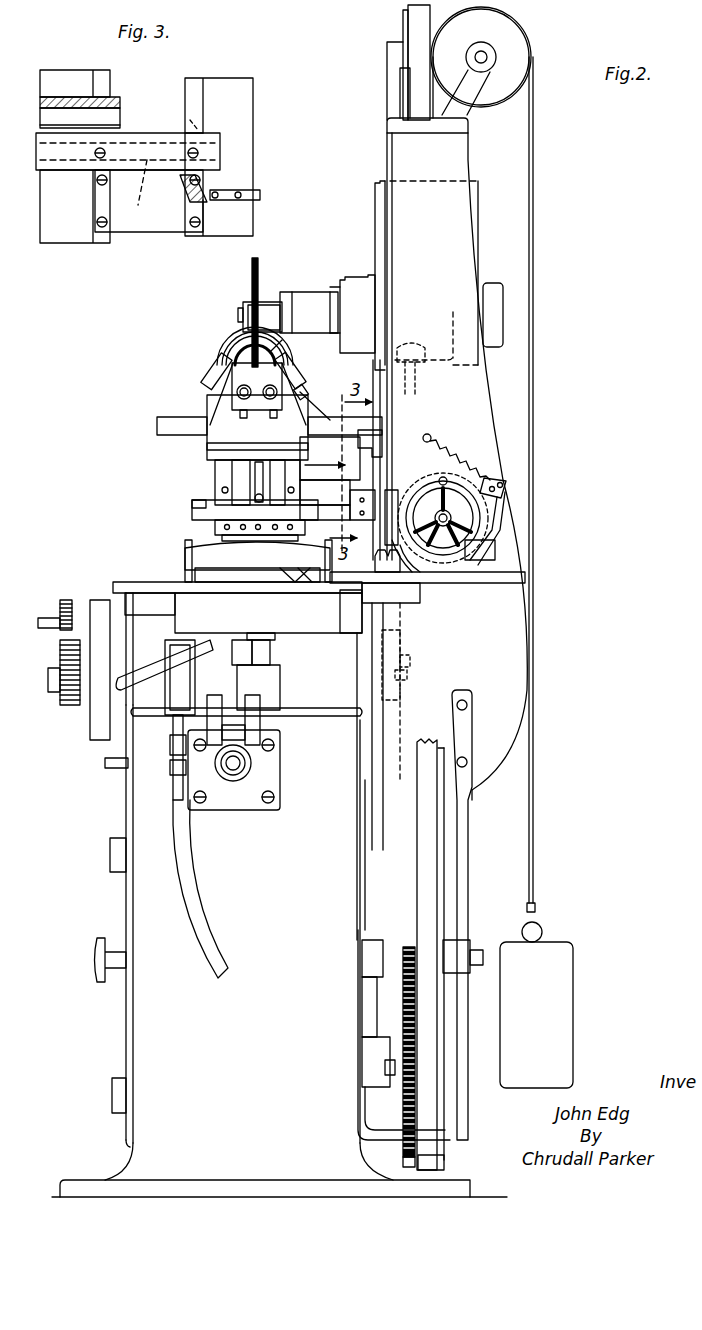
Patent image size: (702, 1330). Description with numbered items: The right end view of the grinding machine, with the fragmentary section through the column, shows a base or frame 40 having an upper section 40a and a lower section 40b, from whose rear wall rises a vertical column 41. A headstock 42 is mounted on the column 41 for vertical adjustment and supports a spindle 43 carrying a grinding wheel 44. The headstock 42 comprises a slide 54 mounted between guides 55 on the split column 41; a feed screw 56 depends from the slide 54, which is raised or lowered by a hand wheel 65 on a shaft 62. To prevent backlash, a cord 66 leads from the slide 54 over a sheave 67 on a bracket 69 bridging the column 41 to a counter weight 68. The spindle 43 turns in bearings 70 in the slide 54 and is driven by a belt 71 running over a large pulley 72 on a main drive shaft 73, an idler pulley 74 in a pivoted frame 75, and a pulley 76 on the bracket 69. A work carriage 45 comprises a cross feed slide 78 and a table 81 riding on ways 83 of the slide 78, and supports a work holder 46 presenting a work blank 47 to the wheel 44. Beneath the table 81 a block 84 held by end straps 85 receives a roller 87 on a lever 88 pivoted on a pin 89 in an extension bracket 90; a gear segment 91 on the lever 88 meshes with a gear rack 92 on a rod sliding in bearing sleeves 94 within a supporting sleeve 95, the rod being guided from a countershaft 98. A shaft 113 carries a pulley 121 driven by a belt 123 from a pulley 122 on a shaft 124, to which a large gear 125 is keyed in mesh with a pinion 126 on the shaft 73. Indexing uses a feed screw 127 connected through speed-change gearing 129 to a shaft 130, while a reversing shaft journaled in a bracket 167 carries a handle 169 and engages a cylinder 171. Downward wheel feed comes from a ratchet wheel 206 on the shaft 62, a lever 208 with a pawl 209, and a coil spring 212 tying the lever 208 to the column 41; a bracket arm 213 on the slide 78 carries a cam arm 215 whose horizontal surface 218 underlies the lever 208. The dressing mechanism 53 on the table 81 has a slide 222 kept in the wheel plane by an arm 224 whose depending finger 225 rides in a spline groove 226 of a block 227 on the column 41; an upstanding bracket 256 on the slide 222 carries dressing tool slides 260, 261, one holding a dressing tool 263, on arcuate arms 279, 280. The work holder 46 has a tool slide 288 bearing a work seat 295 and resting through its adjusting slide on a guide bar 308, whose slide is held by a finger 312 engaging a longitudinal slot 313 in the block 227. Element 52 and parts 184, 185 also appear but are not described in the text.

In FIG. 2, the base 40 is at (279, 951).
In FIG. 2, the upper section of the base 40a is at (360, 640).
In FIG. 2, the lower section of the base 40b is at (340, 855).
In FIG. 3, the vertical column 41 is at (245, 85).
In FIG. 2, the vertical column 41 is at (445, 275).
In FIG. 2, the headstock 42 is at (482, 225).
In FIG. 2, the spindle 43 is at (240, 312).
In FIG. 2, the grinding wheel 44 is at (258, 258).
In FIG. 2, the work carriage 45 is at (183, 580).
In FIG. 2, the work holder 46 is at (212, 470).
In FIG. 2, the work blank 47 is at (245, 375).
In FIG. 2, the ratchet wheel 52 is at (470, 470).
In FIG. 2, the dressing mechanism 53 is at (222, 345).
In FIG. 2, the slide 54 is at (374, 190).
In FIG. 3, the vertical guides 55 is at (190, 80).
In FIG. 2, the feed screw 56 is at (434, 372).
In FIG. 2, the shaft 62 is at (467, 560).
In FIG. 2, the hand wheel 65 is at (478, 524).
In FIG. 2, the cord 66 is at (535, 118).
In FIG. 2, the sheave 67 is at (523, 50).
In FIG. 2, the counter weight 68 is at (560, 1020).
In FIG. 2, the bracket 69 is at (462, 128).
In FIG. 2, the bearings 70 is at (360, 280).
In FIG. 2, the belt 71 is at (412, 14).
In FIG. 2, the large pulley 72 is at (470, 850).
In FIG. 2, the main drive shaft 73 is at (477, 948).
In FIG. 2, the idler pulley 74 is at (440, 1158).
In FIG. 2, the frame 75 is at (365, 1110).
In FIG. 2, the pulley 76 is at (403, 33).
In FIG. 2, the cross feed slide 78 is at (125, 584).
In FIG. 2, the table 81 is at (208, 553).
In FIG. 2, the ways 83 is at (292, 582).
In FIG. 2, the block 84 is at (183, 600).
In FIG. 2, the retaining end straps 85 is at (185, 566).
In FIG. 2, the roller 87 is at (228, 636).
In FIG. 2, the lever 88 is at (272, 652).
In FIG. 2, the pin 89 is at (282, 712).
In FIG. 2, the extension bracket 90 is at (280, 758).
In FIG. 2, the gear segment 91 is at (232, 732).
In FIG. 2, the gear rack 92 is at (235, 770).
In FIG. 2, the bearing sleeves 94 is at (252, 765).
In FIG. 2, the supporting sleeve 95 is at (225, 780).
In FIG. 2, the countershaft 98 is at (125, 770).
In FIG. 2, the shaft 113 is at (412, 660).
In FIG. 2, the pulley 121 is at (410, 682).
In FIG. 2, the pulley 122 is at (385, 1066).
In FIG. 2, the belt 123 is at (400, 886).
In FIG. 2, the shaft 124 is at (372, 1048).
In FIG. 2, the large gear 125 is at (405, 1160).
In FIG. 2, the pinion 126 is at (408, 945).
In FIG. 2, the feed screw 127 is at (52, 618).
In FIG. 2, the speed-change gearing 129 is at (56, 684).
In FIG. 2, the shaft 130 is at (68, 660).
In FIG. 2, the bracket 167 is at (300, 650).
In FIG. 2, the handle 169 is at (125, 680).
In FIG. 2, the cylinder 171 is at (281, 680).
In FIG. 2, the rod 184 is at (175, 712).
In FIG. 2, the tube 185 is at (205, 945).
In FIG. 2, the ratchet wheel 206 is at (503, 503).
In FIG. 2, the lever 208 is at (507, 487).
In FIG. 2, the pawl 209 is at (496, 500).
In FIG. 2, the coil spring 212 is at (450, 455).
In FIG. 2, the bracket arm 213 is at (527, 578).
In FIG. 2, the cam arm 215 is at (405, 555).
In FIG. 2, the horizontal surface 218 is at (492, 547).
In FIG. 2, the slide 222 is at (185, 426).
In FIG. 3, the rearwardly projecting arm 224 is at (112, 118).
In FIG. 3, the depending finger 225 is at (122, 128).
In FIG. 2, the depending finger 225 is at (372, 448).
In FIG. 3, the spline groove 226 is at (188, 140).
In FIG. 2, the spline groove 226 is at (355, 460).
In FIG. 3, the block 227 is at (215, 152).
In FIG. 2, the block 227 is at (380, 470).
In FIG. 2, the upstanding bracket 256 is at (306, 400).
In FIG. 2, the dressing tool slide 260 is at (214, 362).
In FIG. 2, the dressing tool slide 261 is at (296, 360).
In FIG. 2, the dressing tool 263 is at (280, 348).
In FIG. 2, the arcuate arm 279 is at (240, 335).
In FIG. 2, the arcuate arm 280 is at (288, 315).
In FIG. 2, the tool slide 288 is at (225, 450).
In FIG. 2, the work seat 295 is at (215, 430).
In FIG. 2, the guide bar 308 is at (190, 512).
In FIG. 3, the finger 312 is at (205, 183).
In FIG. 2, the finger 312 is at (375, 492).
In FIG. 3, the longitudinal slot 313 is at (152, 190).
In FIG. 2, the longitudinal slot 313 is at (358, 492).